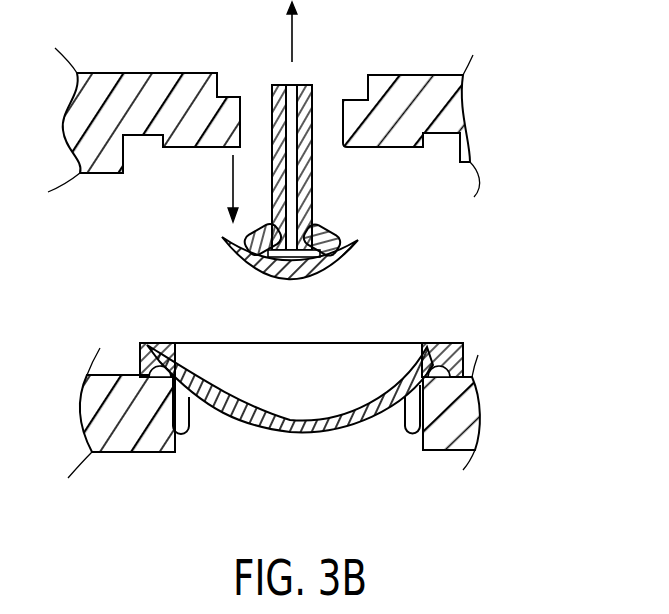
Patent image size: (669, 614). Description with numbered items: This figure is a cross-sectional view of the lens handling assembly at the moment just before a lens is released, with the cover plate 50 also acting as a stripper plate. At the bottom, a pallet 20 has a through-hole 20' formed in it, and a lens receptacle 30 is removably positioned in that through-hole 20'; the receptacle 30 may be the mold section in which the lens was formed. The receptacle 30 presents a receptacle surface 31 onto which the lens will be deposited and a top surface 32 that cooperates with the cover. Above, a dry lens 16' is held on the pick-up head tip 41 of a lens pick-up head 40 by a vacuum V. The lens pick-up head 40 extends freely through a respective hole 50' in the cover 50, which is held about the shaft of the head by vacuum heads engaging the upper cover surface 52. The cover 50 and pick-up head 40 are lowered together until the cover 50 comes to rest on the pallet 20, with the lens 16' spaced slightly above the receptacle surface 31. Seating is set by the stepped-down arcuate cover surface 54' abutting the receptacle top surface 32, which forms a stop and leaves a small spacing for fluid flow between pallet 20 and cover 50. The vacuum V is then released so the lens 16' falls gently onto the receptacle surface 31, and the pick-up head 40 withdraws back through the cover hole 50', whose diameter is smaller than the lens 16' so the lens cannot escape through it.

The upper cover surface 52 is at (140, 73).
The cover hole 50' is at (244, 84).
The cover plate 50 is at (411, 110).
The stepped-down arcuate surface 54' is at (284, 183).
The lens pick-up head 40 is at (313, 189).
The pick-up head tip 41 is at (318, 235).
The dry lens 16' is at (298, 267).
The vacuum V is at (292, 50).
The receptacle top surface 32 is at (150, 343).
The receptacle surface 31 is at (223, 380).
The lens receptacle 30 is at (405, 367).
The pallet 20 is at (274, 423).
The through-hole 20' is at (205, 453).